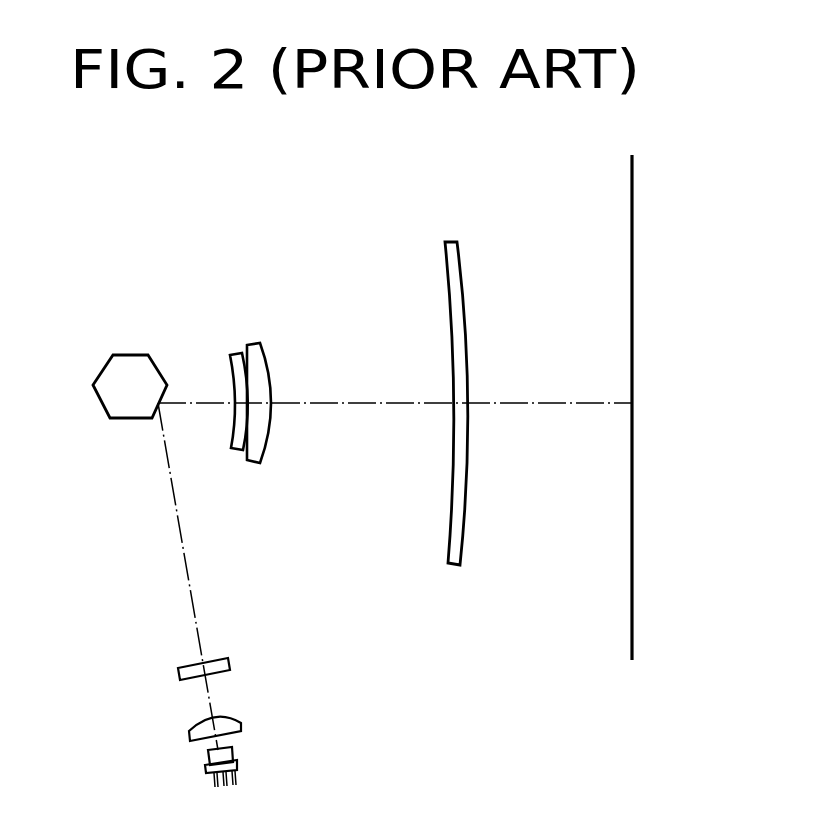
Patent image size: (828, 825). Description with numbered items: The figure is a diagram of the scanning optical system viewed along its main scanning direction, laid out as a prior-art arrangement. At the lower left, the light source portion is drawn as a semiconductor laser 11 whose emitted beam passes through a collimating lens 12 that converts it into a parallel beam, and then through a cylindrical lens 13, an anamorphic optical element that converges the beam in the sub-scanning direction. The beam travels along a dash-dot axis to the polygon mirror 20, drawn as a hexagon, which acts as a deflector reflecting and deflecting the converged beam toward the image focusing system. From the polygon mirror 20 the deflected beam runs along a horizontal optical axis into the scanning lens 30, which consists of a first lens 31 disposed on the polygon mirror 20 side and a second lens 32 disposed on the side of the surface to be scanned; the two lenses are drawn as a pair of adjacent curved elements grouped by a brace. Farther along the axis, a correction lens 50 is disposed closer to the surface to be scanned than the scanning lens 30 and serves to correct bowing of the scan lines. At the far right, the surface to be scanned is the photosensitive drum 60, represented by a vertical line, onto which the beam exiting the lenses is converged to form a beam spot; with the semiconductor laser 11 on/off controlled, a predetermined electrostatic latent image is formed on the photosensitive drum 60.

The semiconductor laser 11 is at (205, 768).
The collimating lens 12 is at (188, 734).
The cylindrical lens 13 is at (178, 673).
The polygon mirror 20 is at (127, 420).
The scanning lens 30 is at (250, 462).
The first lens 31 is at (235, 452).
The second lens 32 is at (250, 460).
The correction lens 50 is at (453, 566).
The photosensitive drum 60 is at (636, 627).